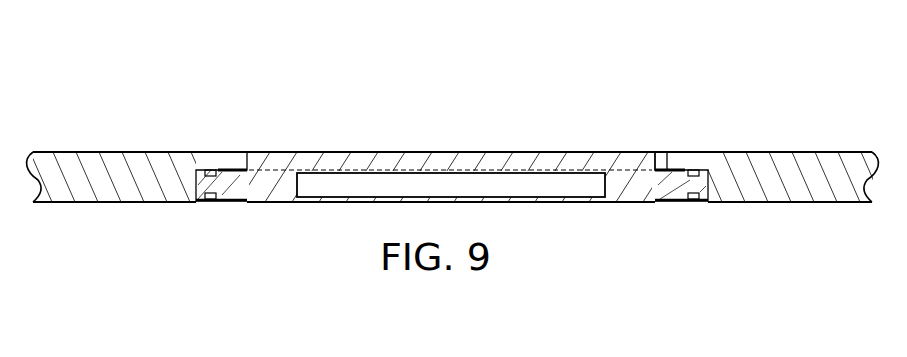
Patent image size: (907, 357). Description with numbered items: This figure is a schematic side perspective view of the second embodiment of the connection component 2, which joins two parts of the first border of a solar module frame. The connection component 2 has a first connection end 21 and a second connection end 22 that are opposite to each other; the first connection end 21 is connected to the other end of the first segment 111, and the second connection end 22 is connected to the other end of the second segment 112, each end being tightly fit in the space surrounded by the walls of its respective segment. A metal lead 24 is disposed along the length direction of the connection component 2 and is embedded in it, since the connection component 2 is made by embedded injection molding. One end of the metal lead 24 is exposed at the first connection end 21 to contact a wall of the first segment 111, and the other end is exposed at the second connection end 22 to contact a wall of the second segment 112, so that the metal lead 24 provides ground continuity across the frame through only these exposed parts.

The connection component 2 is at (507, 160).
The first connection end 21 is at (200, 168).
The second connection end 22 is at (703, 182).
The metal lead 24 is at (667, 168).
The first segment 111 is at (127, 168).
The second segment 112 is at (785, 176).